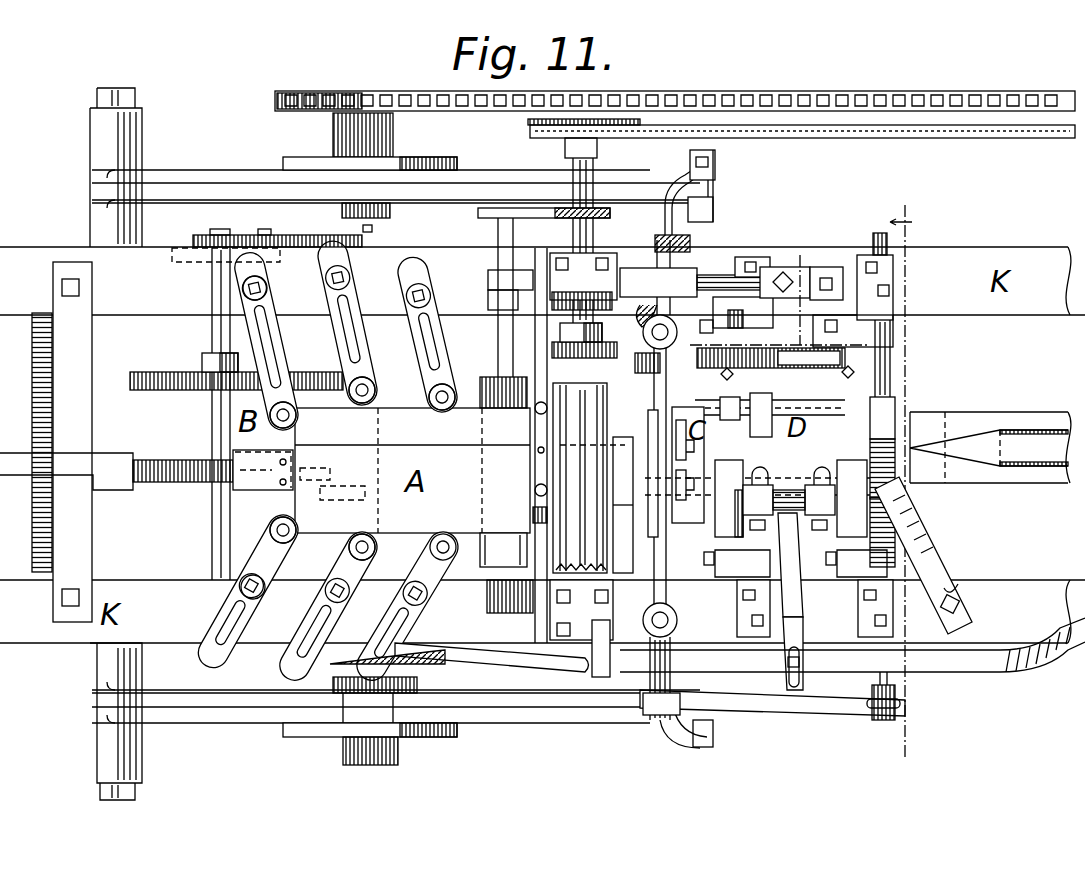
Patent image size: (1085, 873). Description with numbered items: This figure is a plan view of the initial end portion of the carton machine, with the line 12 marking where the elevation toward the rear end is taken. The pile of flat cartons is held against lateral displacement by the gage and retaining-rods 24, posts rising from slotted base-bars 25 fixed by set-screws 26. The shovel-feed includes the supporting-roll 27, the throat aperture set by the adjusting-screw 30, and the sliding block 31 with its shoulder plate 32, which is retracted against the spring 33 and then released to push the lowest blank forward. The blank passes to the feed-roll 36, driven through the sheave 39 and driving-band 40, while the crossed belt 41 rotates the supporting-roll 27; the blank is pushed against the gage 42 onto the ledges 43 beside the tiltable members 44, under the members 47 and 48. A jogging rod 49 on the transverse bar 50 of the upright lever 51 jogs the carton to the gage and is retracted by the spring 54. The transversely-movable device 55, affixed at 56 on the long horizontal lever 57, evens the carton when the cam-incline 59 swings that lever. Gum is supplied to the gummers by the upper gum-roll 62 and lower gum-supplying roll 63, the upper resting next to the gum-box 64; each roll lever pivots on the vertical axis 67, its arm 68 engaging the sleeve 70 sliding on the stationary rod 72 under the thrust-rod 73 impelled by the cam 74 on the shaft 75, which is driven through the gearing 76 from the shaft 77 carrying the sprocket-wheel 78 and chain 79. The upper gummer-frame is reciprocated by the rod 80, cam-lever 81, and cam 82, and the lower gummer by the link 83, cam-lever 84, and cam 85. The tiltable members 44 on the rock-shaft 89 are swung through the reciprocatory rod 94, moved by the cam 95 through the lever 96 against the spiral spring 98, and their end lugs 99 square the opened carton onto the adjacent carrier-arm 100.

The section line 12 is at (908, 491).
The gage and retaining-rods 24 is at (335, 345).
The slotted base-bars 25 is at (300, 318).
The set-screws 26 is at (265, 290).
The supporting-roll 27 is at (506, 495).
The adjusting-screw 30 is at (537, 452).
The sliding block 31 is at (245, 483).
The plate 32 is at (283, 480).
The spring 33 is at (200, 470).
The feed-roll 36 is at (580, 478).
The sheave 39 is at (540, 135).
The driving-band 40 is at (864, 138).
The crossed belt 41 is at (560, 216).
The gage 42 is at (918, 517).
The ledges 43 is at (780, 407).
The tiltable members 44 is at (772, 483).
The member 47 is at (728, 484).
The member 48 is at (655, 432).
The rod 49 is at (600, 447).
The transverse bar 50 is at (620, 505).
The upright lever 51 is at (605, 608).
The spring 54 is at (588, 540).
The transversely-movable device 55 is at (781, 542).
The adjustable attachment 56 is at (797, 653).
The horizontal lever 57 is at (953, 663).
The cam-incline 59 is at (650, 717).
The upper gum-roll 62 is at (833, 373).
The lower gum-supplying roll 63 is at (900, 383).
The gum-box 64 is at (780, 265).
The vertical axis 67 is at (660, 348).
The arm 68 is at (640, 325).
The longitudinally-sliding sleeve 70 is at (690, 270).
The stationary longitudinal rod 72 is at (768, 300).
The thrust-rod 73 is at (325, 240).
The cam 74 is at (193, 258).
The shaft 75 is at (213, 417).
The gearing 76 is at (165, 356).
The shaft 77 is at (365, 340).
The sprocket-wheel 78 is at (296, 91).
The chain 79 is at (785, 95).
The rod 80 is at (670, 200).
The cam-lever 81 is at (207, 180).
The cam 82 is at (310, 157).
The link 83 is at (720, 215).
The cam-lever 84 is at (467, 197).
The cam 85 is at (290, 209).
The rock-shaft 89 is at (797, 508).
The reciprocatory rod 94 is at (895, 688).
The cam 95 is at (410, 670).
The lever 96 is at (540, 668).
The spiral spring 98 is at (897, 553).
The end lugs 99 is at (822, 472).
The carrier-arm 100 is at (990, 447).